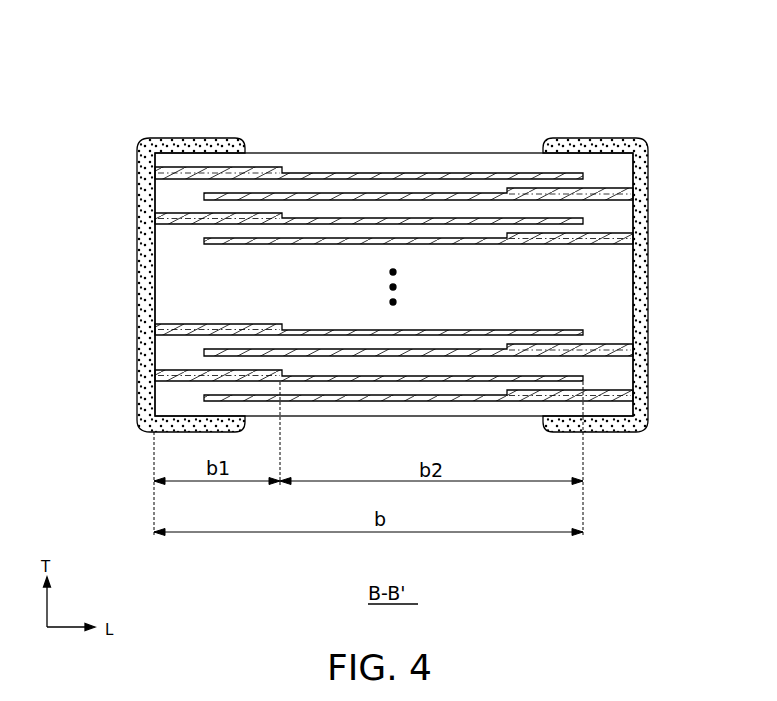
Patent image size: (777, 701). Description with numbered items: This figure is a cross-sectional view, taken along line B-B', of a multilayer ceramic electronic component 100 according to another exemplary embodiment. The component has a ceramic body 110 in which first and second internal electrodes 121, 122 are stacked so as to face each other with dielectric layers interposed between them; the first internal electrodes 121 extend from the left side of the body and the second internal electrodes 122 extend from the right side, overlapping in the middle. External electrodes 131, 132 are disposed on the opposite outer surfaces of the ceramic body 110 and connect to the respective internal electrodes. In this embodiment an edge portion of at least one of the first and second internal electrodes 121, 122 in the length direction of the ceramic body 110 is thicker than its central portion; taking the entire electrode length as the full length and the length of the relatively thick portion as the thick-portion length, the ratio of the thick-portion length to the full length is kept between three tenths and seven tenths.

The multilayer ceramic electronic component 100 is at (293, 40).
The ceramic body 110 is at (352, 146).
The first internal electrode 121 is at (168, 171).
The second internal electrode 122 is at (612, 201).
The external electrode 131 is at (146, 285).
The external electrode 132 is at (640, 326).